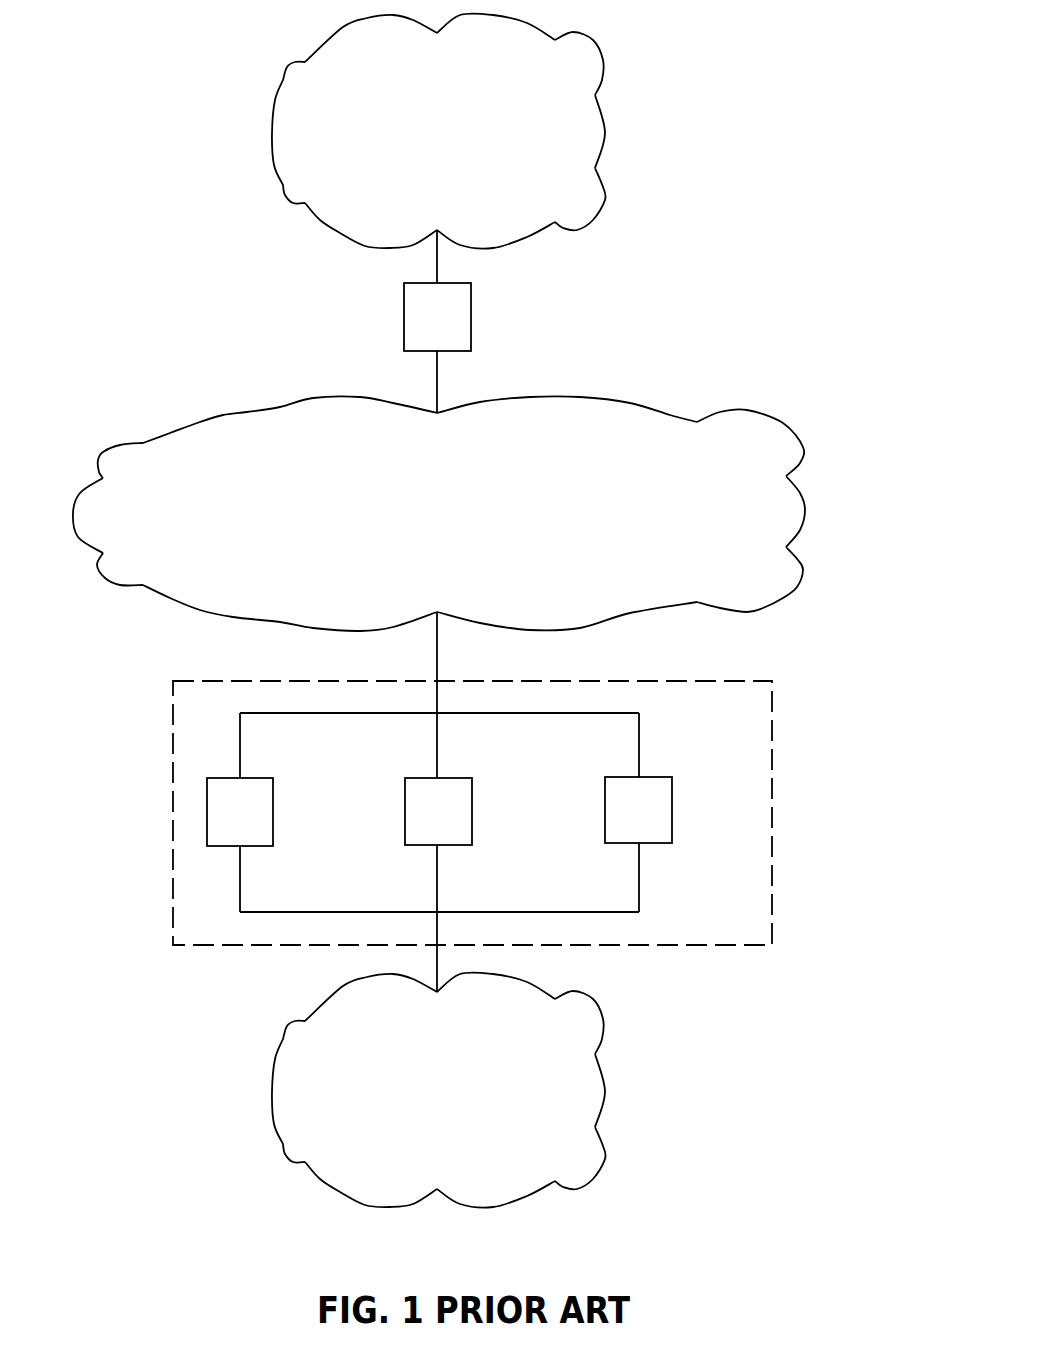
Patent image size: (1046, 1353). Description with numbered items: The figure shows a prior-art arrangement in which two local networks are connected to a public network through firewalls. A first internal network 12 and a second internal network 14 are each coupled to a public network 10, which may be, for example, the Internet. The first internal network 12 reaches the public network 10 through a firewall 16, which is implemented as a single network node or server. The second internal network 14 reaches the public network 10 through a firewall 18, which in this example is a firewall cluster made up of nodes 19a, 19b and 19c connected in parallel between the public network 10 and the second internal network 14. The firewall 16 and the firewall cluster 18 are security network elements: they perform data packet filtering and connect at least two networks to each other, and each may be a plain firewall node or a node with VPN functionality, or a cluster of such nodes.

The public network 10 is at (795, 432).
The first internal network 12 is at (605, 60).
The second internal network 14 is at (608, 1072).
The firewall 16 is at (472, 320).
The firewall cluster 18 is at (773, 738).
The node 19a is at (274, 813).
The node 19b is at (472, 813).
The node 19c is at (673, 807).